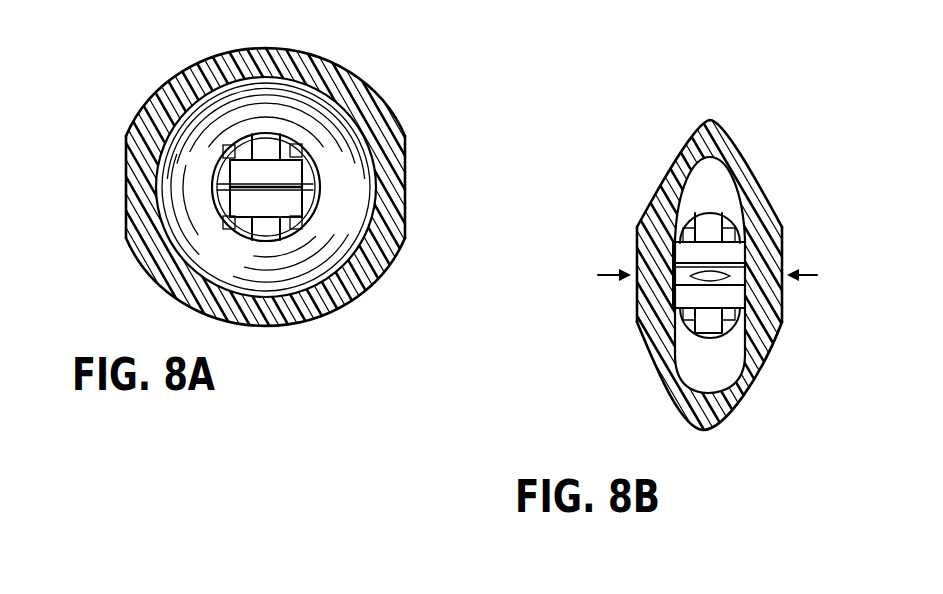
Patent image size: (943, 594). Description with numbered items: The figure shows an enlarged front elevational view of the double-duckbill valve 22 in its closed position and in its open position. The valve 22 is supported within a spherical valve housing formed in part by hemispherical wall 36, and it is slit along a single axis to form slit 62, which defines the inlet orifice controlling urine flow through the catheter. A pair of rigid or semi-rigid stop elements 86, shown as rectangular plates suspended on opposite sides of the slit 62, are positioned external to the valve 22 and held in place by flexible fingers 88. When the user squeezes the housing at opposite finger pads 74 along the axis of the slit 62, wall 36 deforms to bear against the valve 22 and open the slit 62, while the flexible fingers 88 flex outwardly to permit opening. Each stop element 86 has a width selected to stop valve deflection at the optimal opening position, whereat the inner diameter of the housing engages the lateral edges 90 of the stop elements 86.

In FIG. 8A, the valve 22 is at (247, 135).
In FIG. 8B, the valve 22 is at (687, 214).
In FIG. 8A, the hemispherical body 36 is at (350, 303).
In FIG. 8B, the hemispherical body 36 is at (757, 390).
In FIG. 8A, the slit 62 is at (252, 192).
In FIG. 8B, the slit 62 is at (700, 310).
In FIG. 8A, the finger pads 74 is at (405, 187).
In FIG. 8B, the finger pads 74 is at (783, 247).
In FIG. 8A, the stop elements 86 is at (284, 166).
In FIG. 8B, the stop elements 86 is at (738, 248).
In FIG. 8A, the flexible fingers 88 is at (267, 137).
In FIG. 8B, the flexible fingers 88 is at (705, 222).
In FIG. 8A, the lateral edges 90 is at (230, 184).
In FIG. 8B, the lateral edges 90 is at (745, 289).